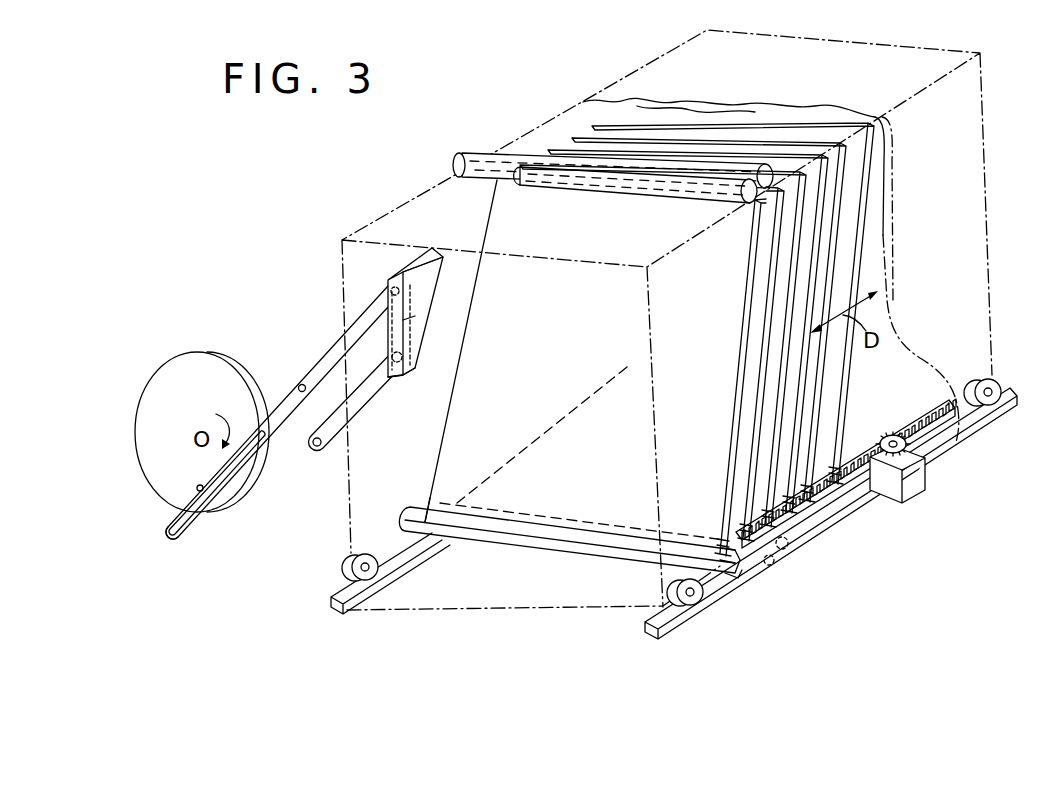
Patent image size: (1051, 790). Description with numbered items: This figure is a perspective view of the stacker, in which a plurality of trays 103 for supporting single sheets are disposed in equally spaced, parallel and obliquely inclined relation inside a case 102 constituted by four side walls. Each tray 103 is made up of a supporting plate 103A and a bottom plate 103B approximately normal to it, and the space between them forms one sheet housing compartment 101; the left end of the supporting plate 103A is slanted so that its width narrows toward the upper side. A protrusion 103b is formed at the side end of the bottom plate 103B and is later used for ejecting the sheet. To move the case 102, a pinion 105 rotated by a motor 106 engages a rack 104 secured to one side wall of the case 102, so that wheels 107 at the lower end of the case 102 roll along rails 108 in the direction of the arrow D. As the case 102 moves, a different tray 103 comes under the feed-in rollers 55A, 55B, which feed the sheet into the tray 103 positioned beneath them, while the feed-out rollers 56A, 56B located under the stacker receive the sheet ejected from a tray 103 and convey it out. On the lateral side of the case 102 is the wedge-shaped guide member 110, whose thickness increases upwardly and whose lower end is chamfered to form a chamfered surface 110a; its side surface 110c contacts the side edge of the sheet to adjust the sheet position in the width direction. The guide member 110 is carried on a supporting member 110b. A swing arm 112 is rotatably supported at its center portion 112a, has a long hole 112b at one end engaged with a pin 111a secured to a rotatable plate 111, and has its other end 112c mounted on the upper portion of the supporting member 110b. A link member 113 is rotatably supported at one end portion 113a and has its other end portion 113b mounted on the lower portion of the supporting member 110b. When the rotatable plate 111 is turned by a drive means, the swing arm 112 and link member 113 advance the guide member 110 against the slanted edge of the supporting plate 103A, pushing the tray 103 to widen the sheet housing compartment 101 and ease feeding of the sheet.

The feed-in roller 55A is at (455, 158).
The feed-in roller 55B is at (470, 150).
The sheet housing compartment 101 is at (795, 405).
The case 102 is at (437, 200).
The tray 103 is at (466, 430).
The supporting plate 103A is at (455, 452).
The bottom plate 103B is at (577, 540).
The protrusion 103b is at (738, 565).
The rack 104 is at (846, 447).
The pinion 105 is at (910, 460).
The motor 106 is at (898, 493).
The wheel 107 is at (348, 562).
The rail 108 is at (353, 600).
The guide member 110 is at (429, 303).
The chamfered surface 110a is at (405, 377).
The supporting member 110b is at (423, 328).
The side surface 110c is at (422, 302).
The rotatable plate 111 is at (202, 368).
The pin 111a is at (231, 498).
The swing arm 112 is at (280, 423).
The center portion 112a is at (299, 387).
The long hole 112b is at (184, 540).
The other end 112c is at (395, 287).
The link member 113 is at (342, 422).
The one end portion 113a is at (315, 447).
The other end portion 113b is at (415, 356).
The feed-out roller 56A is at (768, 565).
The feed-out roller 56B is at (790, 548).